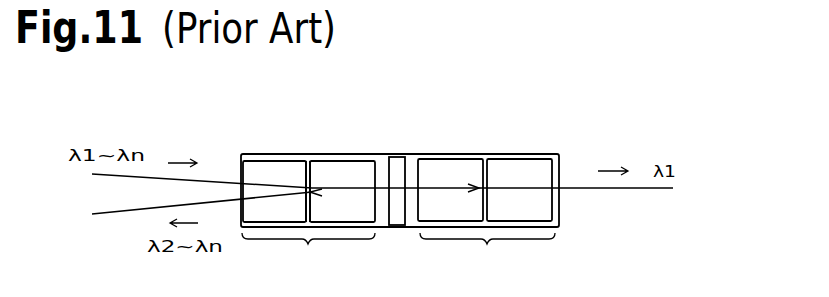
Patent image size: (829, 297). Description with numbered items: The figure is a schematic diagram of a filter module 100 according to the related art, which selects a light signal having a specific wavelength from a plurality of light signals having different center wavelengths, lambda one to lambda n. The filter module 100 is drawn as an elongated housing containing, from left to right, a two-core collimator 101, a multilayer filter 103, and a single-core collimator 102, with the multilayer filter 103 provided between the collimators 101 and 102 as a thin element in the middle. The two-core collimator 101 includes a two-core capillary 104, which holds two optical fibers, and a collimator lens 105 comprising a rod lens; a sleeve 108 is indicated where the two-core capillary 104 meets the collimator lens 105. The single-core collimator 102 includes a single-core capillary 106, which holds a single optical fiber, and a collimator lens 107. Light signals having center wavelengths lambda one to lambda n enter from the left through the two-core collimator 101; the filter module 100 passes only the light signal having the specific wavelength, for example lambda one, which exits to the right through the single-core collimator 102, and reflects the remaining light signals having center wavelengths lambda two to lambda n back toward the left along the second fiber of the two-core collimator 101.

The filter module 100 is at (428, 135).
The two-core collimator 101 is at (308, 254).
The single-core collimator 102 is at (487, 254).
The multilayer filter 103 is at (398, 233).
The two-core capillary 104 is at (271, 151).
The collimator lens 105 is at (351, 151).
The single-core capillary 106 is at (529, 152).
The collimator lens 107 is at (457, 152).
The sleeve 108 is at (305, 152).